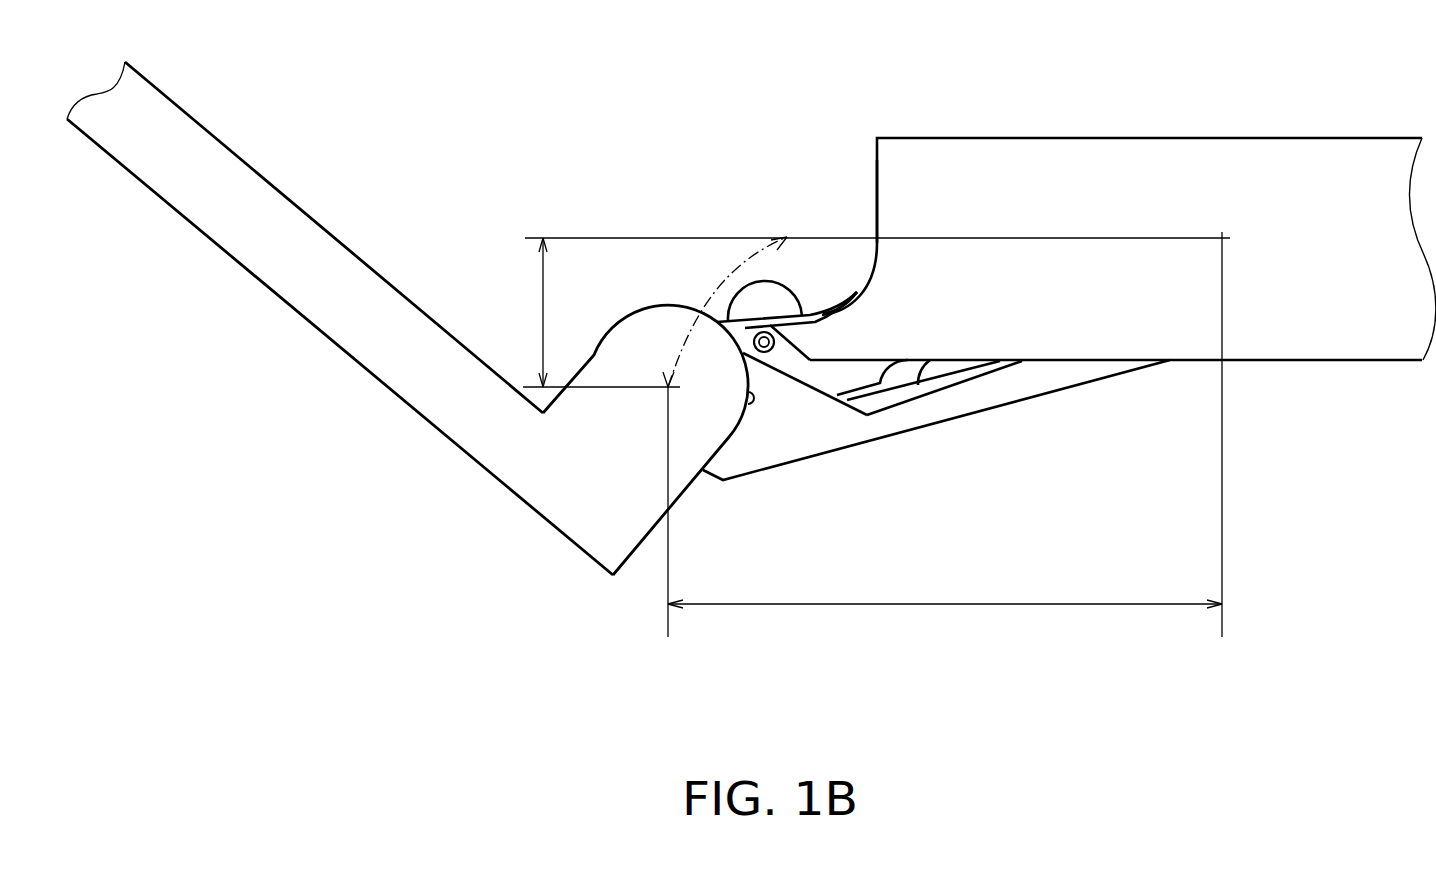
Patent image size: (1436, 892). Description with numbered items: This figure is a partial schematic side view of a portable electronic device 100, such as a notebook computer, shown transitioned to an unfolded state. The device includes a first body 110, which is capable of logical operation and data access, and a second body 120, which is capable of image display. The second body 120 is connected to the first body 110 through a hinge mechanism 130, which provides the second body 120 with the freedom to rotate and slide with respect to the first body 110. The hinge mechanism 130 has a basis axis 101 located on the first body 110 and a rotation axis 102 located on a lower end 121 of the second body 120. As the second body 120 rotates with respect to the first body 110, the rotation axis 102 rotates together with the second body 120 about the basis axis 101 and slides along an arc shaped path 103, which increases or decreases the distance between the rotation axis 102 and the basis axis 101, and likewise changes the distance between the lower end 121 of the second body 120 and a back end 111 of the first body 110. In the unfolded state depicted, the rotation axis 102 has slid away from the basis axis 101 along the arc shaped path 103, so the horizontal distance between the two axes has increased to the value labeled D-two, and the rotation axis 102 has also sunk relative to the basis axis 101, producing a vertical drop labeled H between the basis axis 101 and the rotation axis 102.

The portable electronic device 100 is at (1338, 721).
The basis axis 101 is at (1222, 238).
The rotation axis 102 is at (668, 387).
The arc shaped path 103 is at (713, 273).
The first body 110 is at (1365, 158).
The back end 111 is at (877, 163).
The second body 120 is at (308, 293).
The lower end 121 is at (658, 322).
The hinge mechanism 130 is at (953, 443).